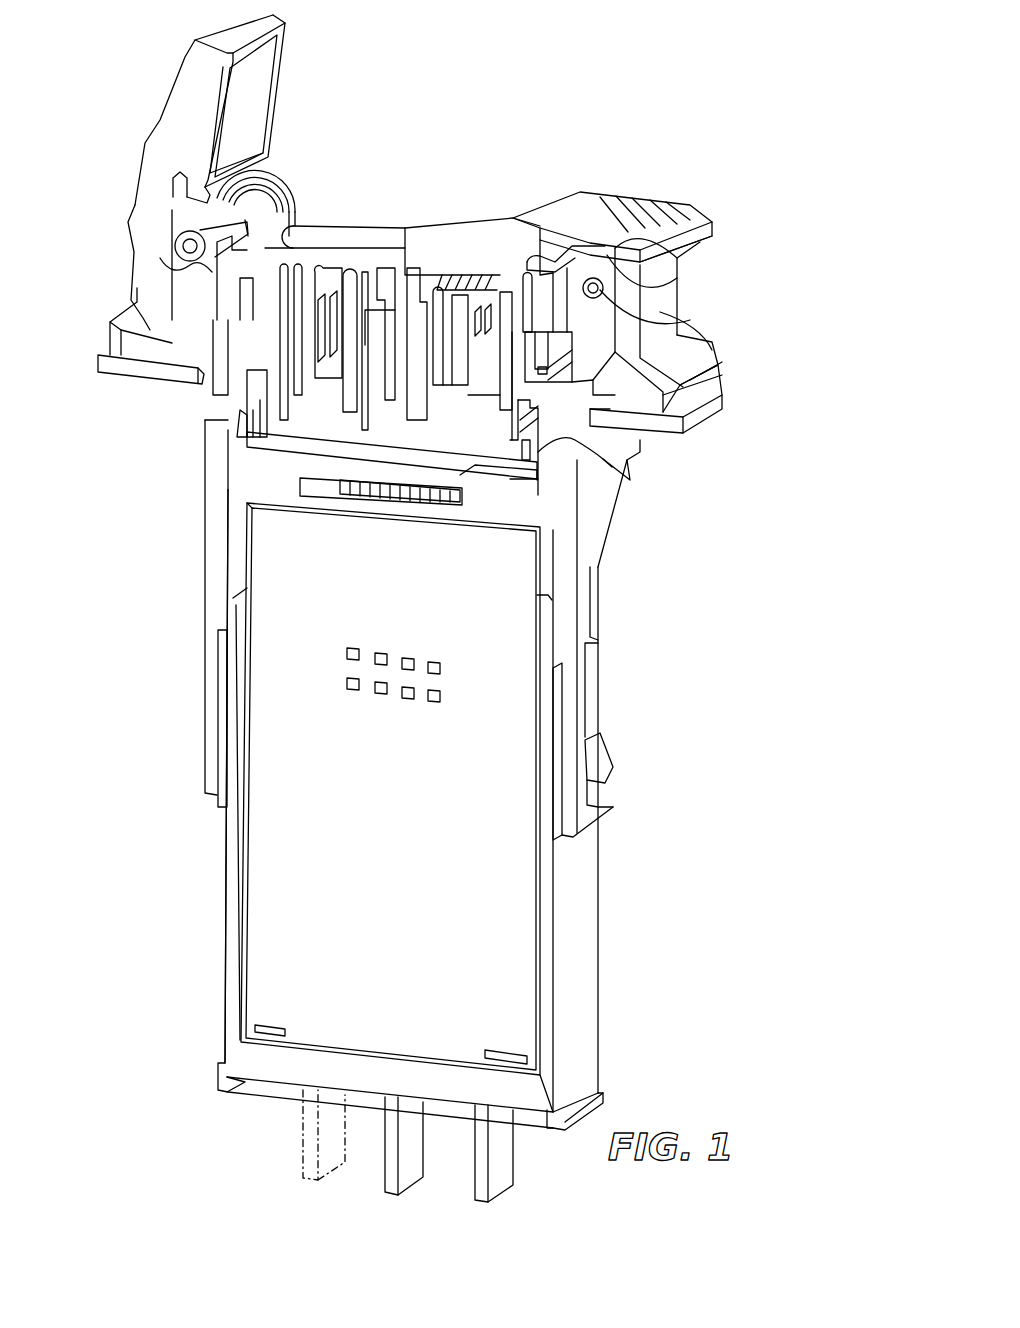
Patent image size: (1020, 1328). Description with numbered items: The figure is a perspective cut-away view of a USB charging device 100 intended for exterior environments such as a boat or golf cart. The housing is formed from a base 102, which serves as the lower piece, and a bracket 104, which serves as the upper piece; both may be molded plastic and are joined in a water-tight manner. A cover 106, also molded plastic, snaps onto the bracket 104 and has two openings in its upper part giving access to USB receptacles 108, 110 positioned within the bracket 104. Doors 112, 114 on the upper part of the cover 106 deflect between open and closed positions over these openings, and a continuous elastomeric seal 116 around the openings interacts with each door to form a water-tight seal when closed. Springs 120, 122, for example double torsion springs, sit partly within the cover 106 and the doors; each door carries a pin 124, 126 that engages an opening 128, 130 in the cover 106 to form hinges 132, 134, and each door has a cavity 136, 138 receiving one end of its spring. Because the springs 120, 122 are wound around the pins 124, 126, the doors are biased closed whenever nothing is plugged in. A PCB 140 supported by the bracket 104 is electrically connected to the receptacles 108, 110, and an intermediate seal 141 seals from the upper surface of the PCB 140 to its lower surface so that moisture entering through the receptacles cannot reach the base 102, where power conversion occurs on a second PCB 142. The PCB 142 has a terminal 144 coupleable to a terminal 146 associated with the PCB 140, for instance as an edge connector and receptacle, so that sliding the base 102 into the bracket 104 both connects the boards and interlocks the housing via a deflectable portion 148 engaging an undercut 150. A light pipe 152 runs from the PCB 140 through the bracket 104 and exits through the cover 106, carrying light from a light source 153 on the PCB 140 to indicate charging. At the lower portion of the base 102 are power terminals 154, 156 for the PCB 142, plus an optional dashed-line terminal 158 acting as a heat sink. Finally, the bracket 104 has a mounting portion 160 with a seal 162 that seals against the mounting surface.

The USB charging device 100 is at (462, 128).
The base 102 is at (585, 945).
The bracket 104 is at (565, 550).
The cover 106 is at (660, 310).
The USB receptacle 108 is at (330, 262).
The USB receptacle 110 is at (483, 298).
The door 112 is at (192, 88).
The door 114 is at (600, 200).
The elastomeric seal 116 is at (345, 220).
The spring 120 is at (178, 232).
The spring 122 is at (640, 268).
The pin 124 is at (183, 248).
The pin 126 is at (660, 313).
The opening 128 is at (165, 270).
The opening 130 is at (596, 305).
The hinge 132 is at (277, 170).
The hinge 134 is at (700, 250).
The cavity 136 is at (177, 183).
The cavity 138 is at (540, 255).
The PCB 140 is at (245, 465).
The intermediate seal 141 is at (258, 422).
The PCB 142 is at (535, 647).
The terminal 144 is at (402, 510).
The terminal 146 is at (445, 480).
The deflectable portion 148 is at (605, 792).
The undercut 150 is at (226, 675).
The light pipe 152 is at (385, 330).
The light source 153 is at (342, 493).
The terminal 154 is at (390, 1165).
The terminal 156 is at (480, 1170).
The terminal 158 is at (305, 1120).
The mounting portion 160 is at (112, 342).
The seal 162 is at (127, 368).